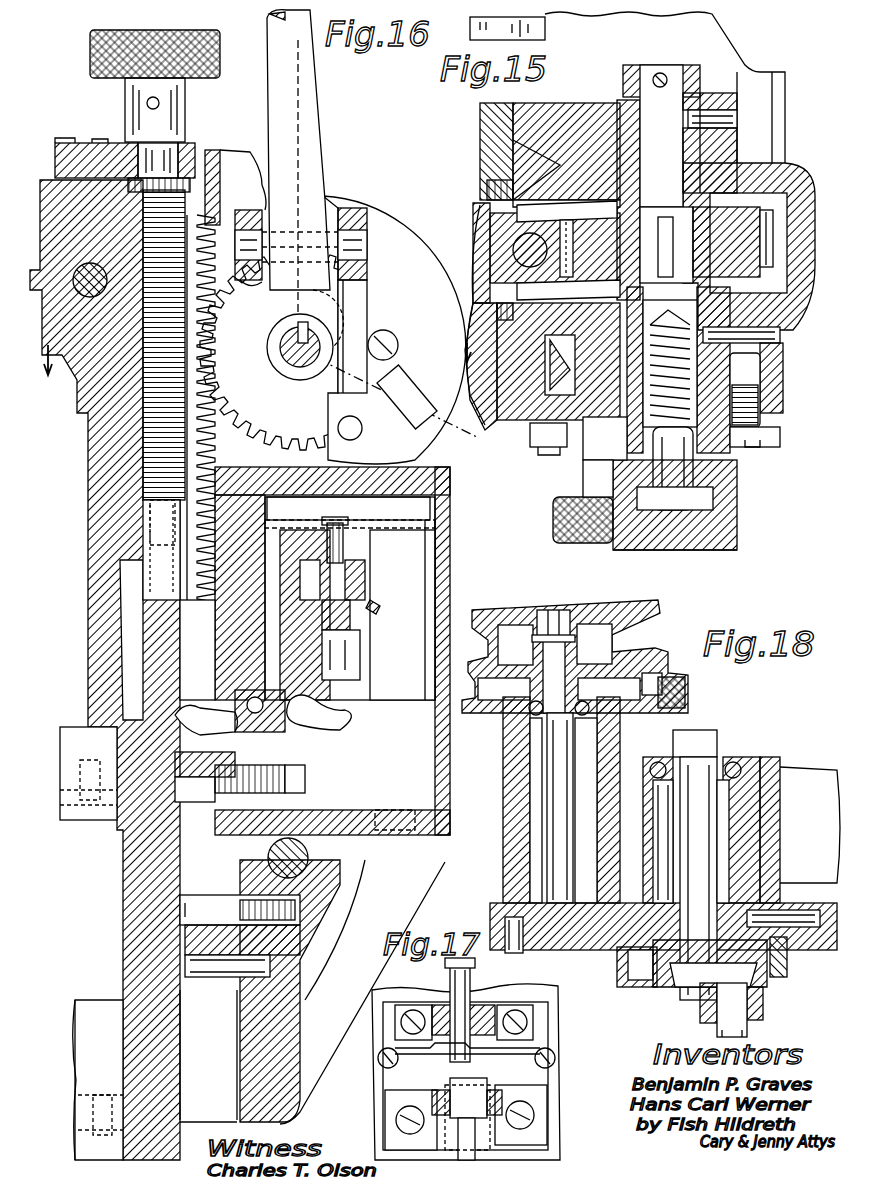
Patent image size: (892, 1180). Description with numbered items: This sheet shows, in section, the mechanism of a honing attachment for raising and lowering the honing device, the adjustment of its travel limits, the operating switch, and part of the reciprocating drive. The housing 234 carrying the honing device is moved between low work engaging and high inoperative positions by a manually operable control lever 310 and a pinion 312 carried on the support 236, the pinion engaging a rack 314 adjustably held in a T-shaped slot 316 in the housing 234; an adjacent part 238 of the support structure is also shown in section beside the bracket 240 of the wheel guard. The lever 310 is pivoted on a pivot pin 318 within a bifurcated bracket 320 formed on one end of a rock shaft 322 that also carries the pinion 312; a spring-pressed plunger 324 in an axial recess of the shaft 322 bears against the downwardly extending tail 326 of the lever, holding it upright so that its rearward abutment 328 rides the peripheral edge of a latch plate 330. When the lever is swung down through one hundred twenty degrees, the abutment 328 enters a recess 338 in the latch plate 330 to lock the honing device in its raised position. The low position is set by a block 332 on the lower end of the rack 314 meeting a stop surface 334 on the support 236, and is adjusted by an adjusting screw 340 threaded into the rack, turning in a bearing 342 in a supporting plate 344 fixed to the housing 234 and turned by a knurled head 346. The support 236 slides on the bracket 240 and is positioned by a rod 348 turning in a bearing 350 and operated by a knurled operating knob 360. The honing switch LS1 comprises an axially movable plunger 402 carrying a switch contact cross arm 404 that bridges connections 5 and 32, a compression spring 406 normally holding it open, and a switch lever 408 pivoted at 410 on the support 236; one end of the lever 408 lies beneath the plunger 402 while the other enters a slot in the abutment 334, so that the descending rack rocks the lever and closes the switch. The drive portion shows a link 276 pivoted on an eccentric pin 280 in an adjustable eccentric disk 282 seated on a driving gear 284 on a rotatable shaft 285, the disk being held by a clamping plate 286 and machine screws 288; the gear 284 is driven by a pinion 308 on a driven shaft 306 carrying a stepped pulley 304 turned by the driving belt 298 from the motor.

In FIG. 17, the connection 5 is at (405, 1005).
In FIG. 16, the connection 32 is at (378, 603).
In FIG. 17, the connection 32 is at (512, 1008).
In FIG. 16, the housing 234 is at (92, 465).
In FIG. 15, the housing 234 is at (493, 140).
In FIG. 18, the housing 234 is at (806, 785).
In FIG. 16, the support 236 is at (245, 157).
In FIG. 15, the support 236 is at (643, 40).
In FIG. 15, the bracket 238 is at (560, 160).
In FIG. 15, the bracket 240 is at (540, 28).
In FIG. 18, the link 276 is at (700, 1005).
In FIG. 18, the eccentric pin 280 is at (750, 1020).
In FIG. 18, the eccentric disk 282 is at (697, 975).
In FIG. 18, the driving gear 284 is at (800, 930).
In FIG. 18, the rotatable shaft 285 is at (700, 893).
In FIG. 18, the clamping plate 286 is at (617, 972).
In FIG. 18, the machine screws 288 is at (782, 977).
In FIG. 18, the driving belt 298 is at (690, 705).
In FIG. 18, the stepped pulley 304 is at (690, 672).
In FIG. 18, the driven shaft 306 is at (575, 757).
In FIG. 18, the pinion 308 is at (535, 922).
In FIG. 16, the control lever 310 is at (302, 90).
In FIG. 16, the pinion 312 is at (293, 431).
In FIG. 15, the pinion 312 is at (748, 223).
In FIG. 16, the rack 314 is at (196, 275).
In FIG. 15, the rack 314 is at (555, 241).
In FIG. 16, the T-shaped slot 316 is at (168, 216).
In FIG. 15, the T-shaped slot 316 is at (508, 300).
In FIG. 16, the pivot pin 318 is at (247, 245).
In FIG. 16, the bifurcated bracket 320 is at (350, 289).
In FIG. 15, the bifurcated bracket 320 is at (733, 527).
In FIG. 16, the rock shaft 322 is at (280, 344).
In FIG. 15, the spring-pressed plunger 324 is at (705, 495).
In FIG. 16, the tail 326 is at (333, 383).
In FIG. 15, the tail 326 is at (677, 547).
In FIG. 16, the abutment 328 is at (328, 200).
In FIG. 16, the latch plate 330 is at (380, 310).
In FIG. 15, the latch plate 330 is at (600, 452).
In FIG. 16, the block 332 is at (196, 662).
In FIG. 15, the block 332 is at (675, 210).
In FIG. 16, the stop surface 334 is at (215, 1025).
In FIG. 16, the recess 338 is at (400, 396).
In FIG. 16, the adjusting screw 340 is at (160, 498).
In FIG. 15, the adjusting screw 340 is at (563, 222).
In FIG. 16, the bearing 342 is at (185, 152).
In FIG. 16, the supporting plate 344 is at (62, 148).
In FIG. 16, the knurled head 346 is at (92, 50).
In FIG. 16, the rod 348 is at (300, 830).
In FIG. 16, the bearing 350 is at (315, 832).
In FIG. 15, the knurled operating knob 360 is at (553, 520).
In FIG. 16, the plunger 402 is at (348, 570).
In FIG. 17, the plunger 402 is at (470, 1090).
In FIG. 16, the switch contact cross arm 404 is at (362, 670).
In FIG. 17, the switch contact cross arm 404 is at (530, 1045).
In FIG. 16, the compression spring 406 is at (352, 622).
In FIG. 17, the compression spring 406 is at (446, 1050).
In FIG. 16, the switch lever 408 is at (175, 722).
In FIG. 17, the switch lever 408 is at (372, 1100).
In FIG. 16, the pivot 410 is at (262, 707).
In FIG. 17, the pivot 410 is at (490, 1133).
In FIG. 16, the honing switch LS1 is at (350, 598).
In FIG. 17, the honing switch LS1 is at (530, 1095).